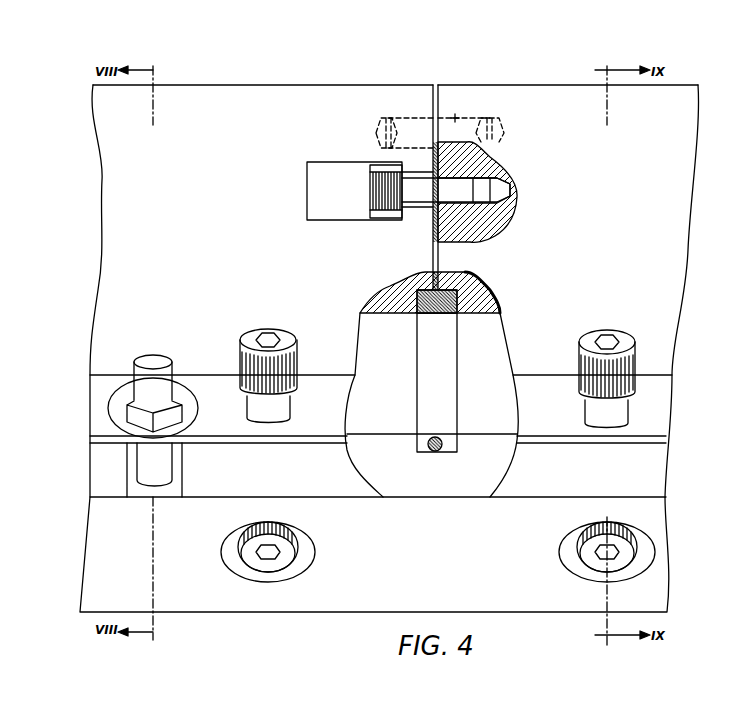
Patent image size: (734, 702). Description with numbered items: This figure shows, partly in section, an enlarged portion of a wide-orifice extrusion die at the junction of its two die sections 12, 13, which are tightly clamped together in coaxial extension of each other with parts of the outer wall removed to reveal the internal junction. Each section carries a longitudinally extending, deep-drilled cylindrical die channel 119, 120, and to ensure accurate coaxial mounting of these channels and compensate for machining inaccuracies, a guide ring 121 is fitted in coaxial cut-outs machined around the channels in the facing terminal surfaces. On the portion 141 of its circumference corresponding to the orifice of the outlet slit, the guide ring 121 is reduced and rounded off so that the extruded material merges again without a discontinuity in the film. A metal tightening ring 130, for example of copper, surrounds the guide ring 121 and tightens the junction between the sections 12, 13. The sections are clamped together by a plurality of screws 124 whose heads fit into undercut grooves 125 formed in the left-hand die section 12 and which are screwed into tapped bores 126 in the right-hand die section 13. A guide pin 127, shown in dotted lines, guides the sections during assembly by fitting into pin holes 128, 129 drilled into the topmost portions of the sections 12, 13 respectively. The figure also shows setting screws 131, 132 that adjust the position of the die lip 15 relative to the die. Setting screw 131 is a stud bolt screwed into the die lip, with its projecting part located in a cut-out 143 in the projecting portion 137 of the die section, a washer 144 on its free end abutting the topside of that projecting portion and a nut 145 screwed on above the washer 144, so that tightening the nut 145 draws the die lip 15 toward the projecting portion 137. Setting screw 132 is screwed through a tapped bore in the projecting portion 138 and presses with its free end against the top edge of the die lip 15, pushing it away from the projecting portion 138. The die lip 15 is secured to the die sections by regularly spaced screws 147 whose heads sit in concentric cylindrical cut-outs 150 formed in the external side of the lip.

The die section 12 is at (330, 85).
The die section 13 is at (530, 87).
The die lip 15 is at (308, 600).
The die channel 119 is at (362, 313).
The die channel 120 is at (497, 313).
The guide ring 121 is at (440, 315).
The screw 124 is at (390, 222).
The undercut groove 125 is at (312, 162).
The tapped bore 126 is at (436, 206).
The guide pin 127 is at (459, 114).
The pin hole 128 is at (378, 124).
The pin hole 129 is at (494, 126).
The tightening ring 130 is at (440, 85).
The setting screw 131 is at (146, 363).
The setting screw 132 is at (282, 330).
The projecting portion 137 is at (200, 376).
The projecting portion 138 is at (650, 380).
The portion of guide ring 141 is at (437, 450).
The cut-out 143 is at (181, 492).
The washer 144 is at (185, 409).
The nut 145 is at (128, 406).
The screw 147 is at (288, 558).
The cylindrical cut-out 150 is at (306, 540).